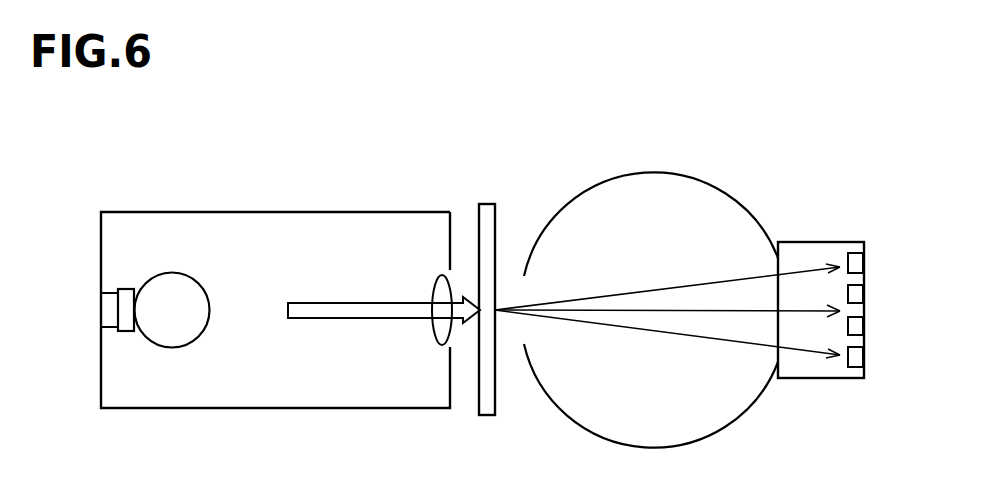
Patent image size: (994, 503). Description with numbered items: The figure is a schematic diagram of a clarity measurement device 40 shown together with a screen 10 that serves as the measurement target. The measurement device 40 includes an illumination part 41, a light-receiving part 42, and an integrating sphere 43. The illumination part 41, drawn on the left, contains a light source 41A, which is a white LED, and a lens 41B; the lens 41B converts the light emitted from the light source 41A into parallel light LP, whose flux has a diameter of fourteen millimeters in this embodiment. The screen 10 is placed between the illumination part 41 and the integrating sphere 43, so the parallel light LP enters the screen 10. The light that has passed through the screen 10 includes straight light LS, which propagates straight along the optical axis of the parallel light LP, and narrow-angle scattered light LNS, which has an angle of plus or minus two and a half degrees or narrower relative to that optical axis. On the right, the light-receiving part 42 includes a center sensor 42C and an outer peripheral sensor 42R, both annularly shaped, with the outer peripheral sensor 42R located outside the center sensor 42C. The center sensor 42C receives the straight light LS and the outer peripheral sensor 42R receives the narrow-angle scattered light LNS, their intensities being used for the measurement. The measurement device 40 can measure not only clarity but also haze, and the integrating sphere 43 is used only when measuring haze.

The clarity measurement device 40 is at (789, 154).
The illumination part 41 is at (276, 212).
The light source 41A is at (164, 348).
The lens 41B is at (432, 330).
The parallel light LP is at (457, 297).
The screen 10 is at (487, 418).
The narrow-angle scattered light LNS is at (665, 285).
The straight light LS is at (716, 309).
The integrating sphere 43 is at (655, 445).
The light-receiving part 42 is at (822, 242).
The outer peripheral sensor 42R is at (866, 262).
The center sensor 42C is at (866, 293).